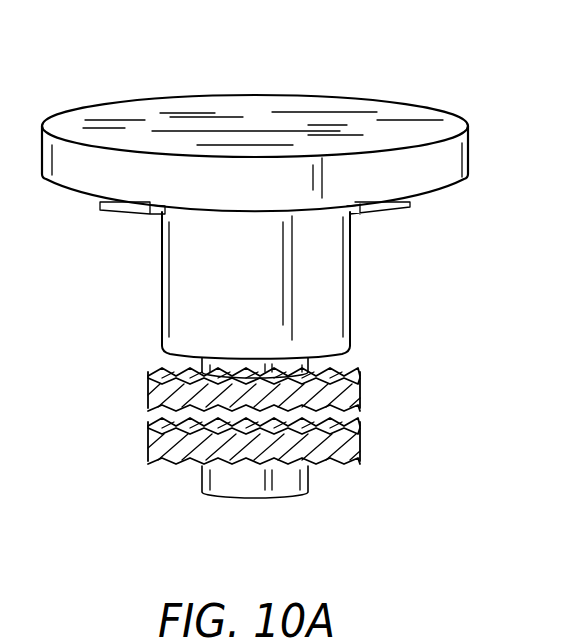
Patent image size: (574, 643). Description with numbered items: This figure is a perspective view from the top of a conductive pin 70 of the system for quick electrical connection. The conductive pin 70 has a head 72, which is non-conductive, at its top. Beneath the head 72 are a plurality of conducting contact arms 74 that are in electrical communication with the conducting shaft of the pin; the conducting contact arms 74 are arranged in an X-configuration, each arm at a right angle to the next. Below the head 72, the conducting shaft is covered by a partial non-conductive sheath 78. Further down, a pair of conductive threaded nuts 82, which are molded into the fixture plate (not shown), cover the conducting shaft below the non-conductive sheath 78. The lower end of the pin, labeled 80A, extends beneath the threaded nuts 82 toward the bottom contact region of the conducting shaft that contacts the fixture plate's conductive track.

The conductive pin 70 is at (400, 71).
The head 72 is at (447, 161).
The conducting contact arms 74 is at (128, 214).
The non-conductive sheath 78 is at (330, 300).
The conductive threaded nuts 82 is at (362, 445).
The shank / stem end 80A is at (258, 517).